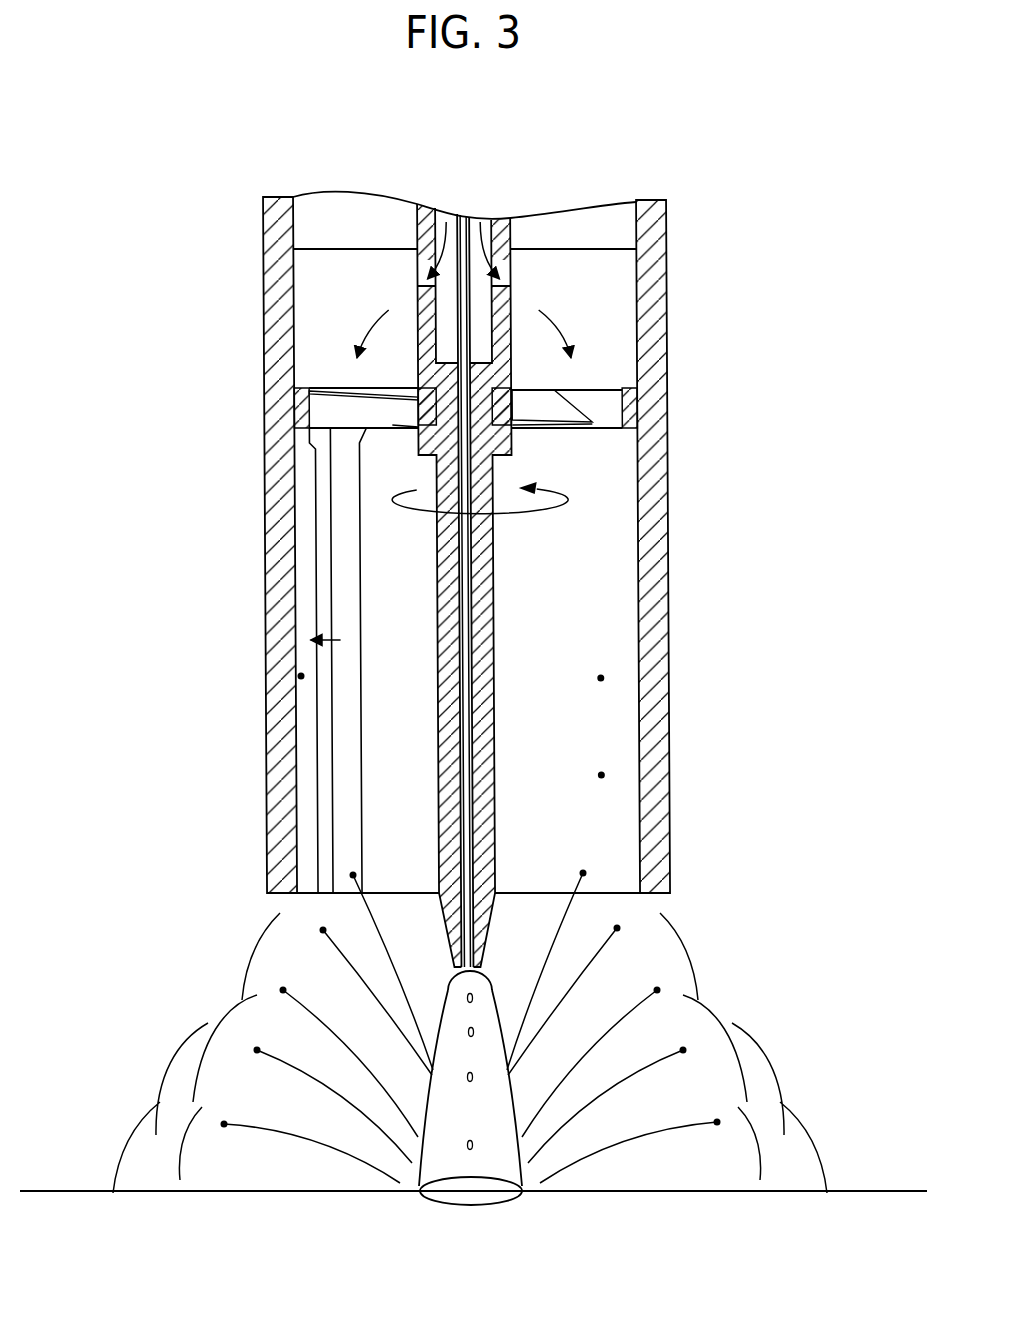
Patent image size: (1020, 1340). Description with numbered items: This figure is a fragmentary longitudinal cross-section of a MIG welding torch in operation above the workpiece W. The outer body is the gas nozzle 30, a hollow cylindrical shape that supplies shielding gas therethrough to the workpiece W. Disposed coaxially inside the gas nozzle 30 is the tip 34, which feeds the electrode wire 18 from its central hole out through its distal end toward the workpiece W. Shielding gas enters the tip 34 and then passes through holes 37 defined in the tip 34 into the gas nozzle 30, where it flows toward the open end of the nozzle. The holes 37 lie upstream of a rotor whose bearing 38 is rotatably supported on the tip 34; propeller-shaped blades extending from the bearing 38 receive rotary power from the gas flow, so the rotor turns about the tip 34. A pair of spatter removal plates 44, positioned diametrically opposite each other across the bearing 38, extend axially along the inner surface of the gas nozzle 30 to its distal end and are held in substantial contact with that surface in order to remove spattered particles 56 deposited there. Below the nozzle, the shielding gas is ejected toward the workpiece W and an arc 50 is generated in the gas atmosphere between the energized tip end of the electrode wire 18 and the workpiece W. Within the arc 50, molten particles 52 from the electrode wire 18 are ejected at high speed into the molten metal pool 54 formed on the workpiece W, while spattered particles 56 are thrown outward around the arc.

The electrode wire 18 is at (468, 644).
The gas nozzle 30 is at (270, 552).
The tip 34 is at (491, 580).
The holes 37 is at (421, 260).
The bearing 38 is at (513, 390).
The spatter removal plates 44 is at (337, 807).
The arc 50 is at (496, 1047).
The molten particles 52 is at (512, 995).
The molten metal pool 54 is at (488, 1196).
The spattered particles 56 is at (301, 676).
The workpiece W is at (853, 1205).